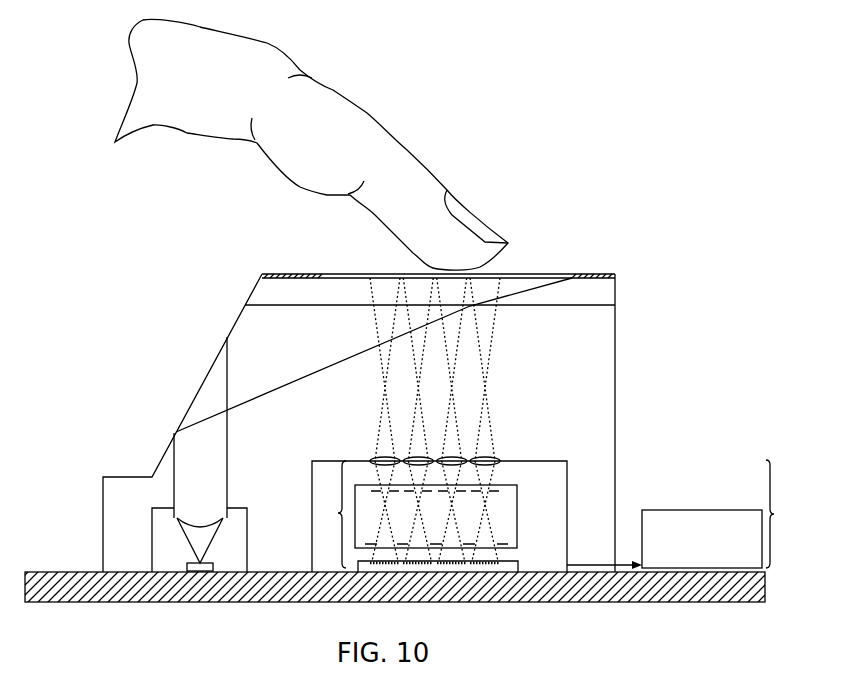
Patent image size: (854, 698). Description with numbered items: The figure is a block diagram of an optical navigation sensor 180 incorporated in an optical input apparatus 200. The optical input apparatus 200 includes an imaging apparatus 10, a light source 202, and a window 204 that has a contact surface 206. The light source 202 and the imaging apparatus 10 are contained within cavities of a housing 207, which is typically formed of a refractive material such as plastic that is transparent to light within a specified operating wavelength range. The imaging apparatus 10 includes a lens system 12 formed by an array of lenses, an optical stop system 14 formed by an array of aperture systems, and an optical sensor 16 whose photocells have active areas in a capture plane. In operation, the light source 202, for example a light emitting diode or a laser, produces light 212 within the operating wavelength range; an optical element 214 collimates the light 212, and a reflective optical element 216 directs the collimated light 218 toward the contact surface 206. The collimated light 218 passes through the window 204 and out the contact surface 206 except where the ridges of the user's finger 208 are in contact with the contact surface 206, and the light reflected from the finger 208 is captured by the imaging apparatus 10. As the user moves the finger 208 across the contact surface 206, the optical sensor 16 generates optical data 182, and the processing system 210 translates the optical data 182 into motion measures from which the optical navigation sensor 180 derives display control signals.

The imaging apparatus 10 is at (339, 457).
The lens system 12 is at (522, 454).
The optical stop system 14 is at (518, 516).
The optical sensor 16 is at (518, 563).
The optical navigation sensor 180 is at (795, 509).
The optical data 182 is at (625, 563).
The optical input apparatus 200 is at (678, 182).
The light source 202 is at (215, 565).
The window 204 is at (555, 278).
The contact surface 206 is at (366, 262).
The housing 207 is at (617, 368).
The finger 208 is at (437, 172).
The processing system 210 is at (702, 507).
The light 212 is at (180, 534).
The optical element 214 is at (223, 518).
The reflective optical element 216 is at (200, 388).
The collimated light 218 is at (228, 467).